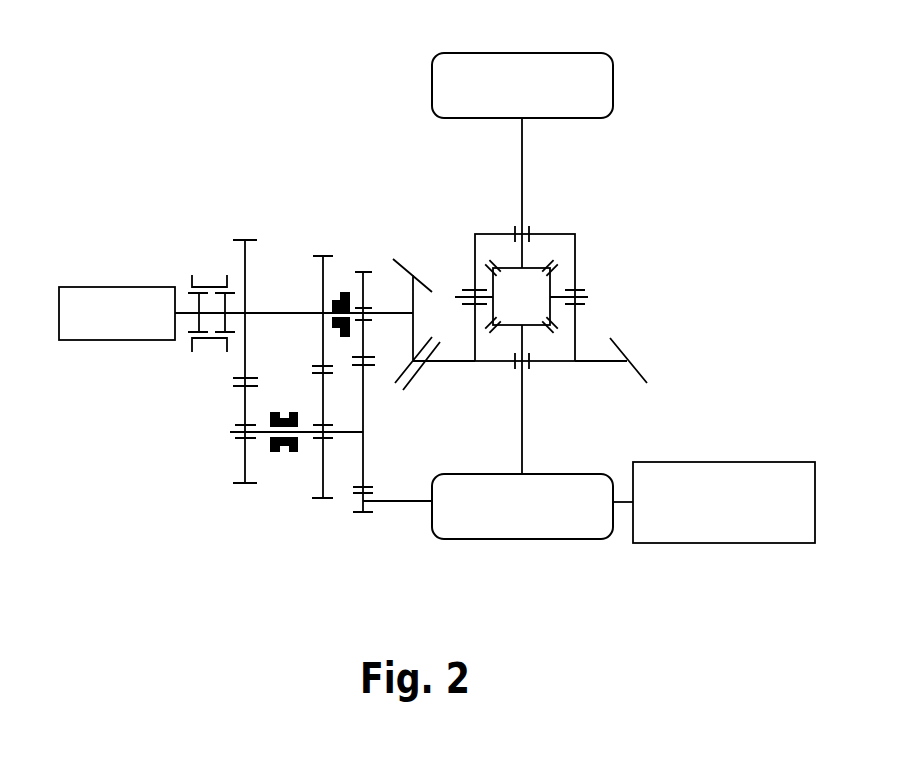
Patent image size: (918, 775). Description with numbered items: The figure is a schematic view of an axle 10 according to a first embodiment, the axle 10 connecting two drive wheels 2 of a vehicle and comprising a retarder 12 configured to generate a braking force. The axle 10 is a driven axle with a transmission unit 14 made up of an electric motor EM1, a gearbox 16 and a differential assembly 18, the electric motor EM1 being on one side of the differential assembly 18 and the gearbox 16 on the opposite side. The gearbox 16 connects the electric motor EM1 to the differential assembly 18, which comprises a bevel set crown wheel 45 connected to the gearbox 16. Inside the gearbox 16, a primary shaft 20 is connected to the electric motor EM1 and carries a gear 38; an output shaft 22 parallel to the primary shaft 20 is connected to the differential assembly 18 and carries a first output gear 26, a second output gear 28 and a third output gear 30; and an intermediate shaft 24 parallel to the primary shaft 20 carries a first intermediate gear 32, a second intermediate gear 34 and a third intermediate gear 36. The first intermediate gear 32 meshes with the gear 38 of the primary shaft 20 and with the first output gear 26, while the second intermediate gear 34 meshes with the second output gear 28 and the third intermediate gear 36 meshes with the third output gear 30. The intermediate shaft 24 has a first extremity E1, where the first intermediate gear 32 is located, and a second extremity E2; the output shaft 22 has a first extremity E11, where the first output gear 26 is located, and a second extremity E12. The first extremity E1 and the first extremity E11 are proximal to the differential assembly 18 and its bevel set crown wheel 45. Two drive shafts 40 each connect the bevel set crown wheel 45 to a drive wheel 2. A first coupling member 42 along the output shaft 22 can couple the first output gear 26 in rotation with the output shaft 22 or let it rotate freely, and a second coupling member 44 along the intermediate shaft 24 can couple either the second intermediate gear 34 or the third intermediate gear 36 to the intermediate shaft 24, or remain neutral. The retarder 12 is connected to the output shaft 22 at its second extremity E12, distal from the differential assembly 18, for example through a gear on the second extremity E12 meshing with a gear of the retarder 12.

The drive wheel 2 is at (563, 53).
The axle 10 is at (606, 144).
The retarder 12 is at (89, 312).
The transmission unit 14 is at (373, 175).
The gearbox 16 is at (258, 540).
The differential assembly 18 is at (627, 280).
The primary shaft 20 is at (417, 502).
The output shaft 22 is at (265, 312).
The intermediate shaft 24 is at (345, 434).
The first output gear 26 is at (364, 287).
The second output gear 28 is at (326, 273).
The third output gear 30 is at (245, 265).
The first intermediate gear 32 is at (363, 418).
The second intermediate gear 34 is at (322, 468).
The third intermediate gear 36 is at (238, 463).
The gear 38 is at (385, 502).
The drive shaft 40 is at (522, 162).
The first coupling member 42 is at (335, 337).
The second coupling member 44 is at (278, 412).
The bevel set crown wheel 45 is at (583, 363).
The first extremity of the intermediate shaft E1 is at (363, 432).
The second extremity of the intermediate shaft E2 is at (230, 432).
The first extremity of the output shaft E11 is at (383, 315).
The second extremity of the output shaft E12 is at (232, 317).
The electric motor EM1 is at (714, 502).